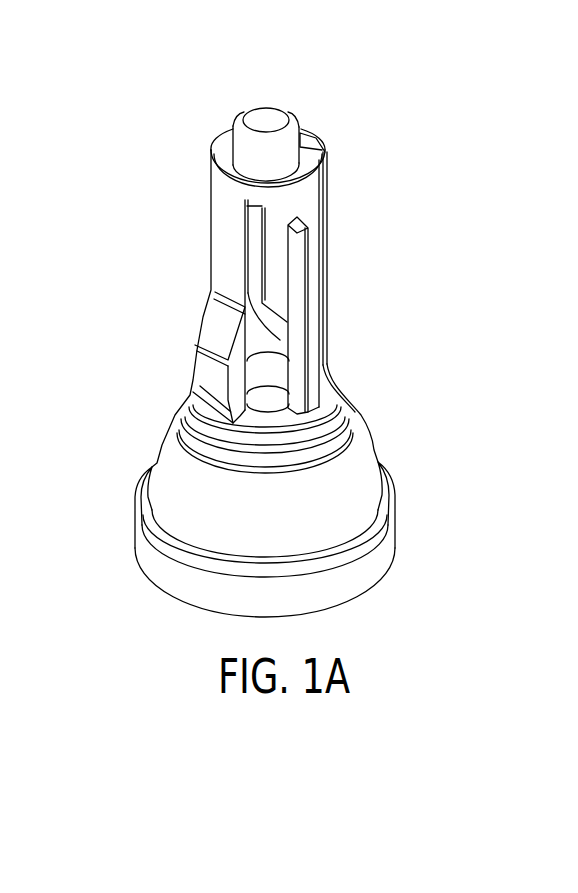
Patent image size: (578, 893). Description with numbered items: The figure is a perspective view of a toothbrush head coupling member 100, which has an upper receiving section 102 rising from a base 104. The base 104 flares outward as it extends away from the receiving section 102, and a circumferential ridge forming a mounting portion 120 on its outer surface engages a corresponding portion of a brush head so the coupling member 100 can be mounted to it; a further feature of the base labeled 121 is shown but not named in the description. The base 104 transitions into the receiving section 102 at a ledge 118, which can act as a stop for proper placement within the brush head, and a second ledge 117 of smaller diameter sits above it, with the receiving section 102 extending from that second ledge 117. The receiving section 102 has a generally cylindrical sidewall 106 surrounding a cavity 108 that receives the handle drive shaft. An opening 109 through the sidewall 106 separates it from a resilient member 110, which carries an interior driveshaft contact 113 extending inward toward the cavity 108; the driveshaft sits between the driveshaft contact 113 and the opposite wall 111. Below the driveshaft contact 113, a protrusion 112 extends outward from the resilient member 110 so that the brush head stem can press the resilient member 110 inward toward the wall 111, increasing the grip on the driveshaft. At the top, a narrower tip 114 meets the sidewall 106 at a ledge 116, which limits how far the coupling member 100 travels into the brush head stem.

The coupling member 100 is at (158, 124).
The receiving section 102 is at (384, 222).
The base 104 is at (404, 426).
The sidewall 106 is at (318, 331).
The cavity 108 is at (250, 333).
The opening 109 is at (304, 283).
The resilient member 110 is at (236, 265).
The wall 111 is at (283, 217).
The protrusion 112 is at (206, 367).
The driveshaft contact 113 is at (263, 247).
The tip 114 is at (264, 121).
The ledge 116 is at (310, 153).
The second ledge 117 is at (335, 381).
The ledge 118 is at (190, 422).
The mounting portion 120 is at (392, 498).
The skirt 121 is at (333, 527).